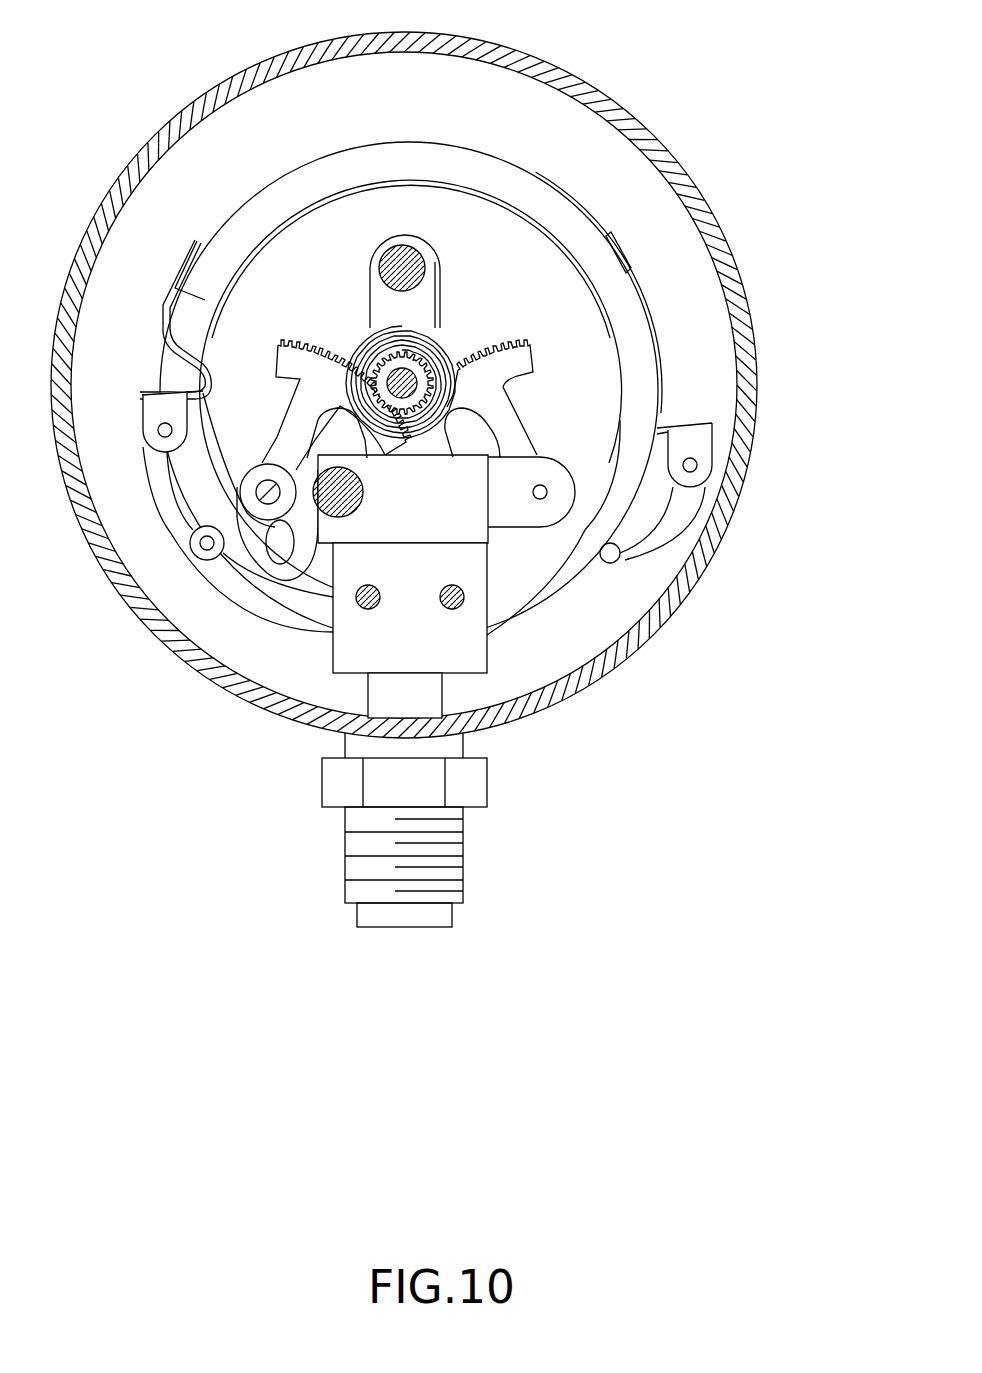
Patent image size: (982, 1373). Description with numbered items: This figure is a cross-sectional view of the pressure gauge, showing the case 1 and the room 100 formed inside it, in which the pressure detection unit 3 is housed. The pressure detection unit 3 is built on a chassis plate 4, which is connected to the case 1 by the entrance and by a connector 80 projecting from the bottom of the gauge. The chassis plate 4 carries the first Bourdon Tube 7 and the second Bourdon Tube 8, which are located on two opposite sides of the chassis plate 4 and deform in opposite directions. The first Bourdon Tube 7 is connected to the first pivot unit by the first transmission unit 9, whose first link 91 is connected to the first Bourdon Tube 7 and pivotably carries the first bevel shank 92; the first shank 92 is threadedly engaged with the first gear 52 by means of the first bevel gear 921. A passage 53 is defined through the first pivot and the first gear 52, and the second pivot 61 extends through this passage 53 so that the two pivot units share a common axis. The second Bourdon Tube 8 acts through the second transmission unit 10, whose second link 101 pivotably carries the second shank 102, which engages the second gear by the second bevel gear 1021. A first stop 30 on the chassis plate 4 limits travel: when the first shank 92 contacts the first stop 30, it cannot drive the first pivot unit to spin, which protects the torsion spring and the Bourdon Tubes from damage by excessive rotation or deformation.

The case 1 is at (628, 88).
The room 100 is at (262, 112).
The pressure detection unit 3 is at (650, 247).
The first Bourdon Tube 7 is at (427, 147).
The second Bourdon Tube 8 is at (172, 370).
The first transmission unit 9 is at (196, 563).
The first link 91 is at (170, 480).
The first bevel shank 92 is at (237, 562).
The first bevel gear 921 is at (303, 345).
The second transmission unit 10 is at (662, 462).
The second link 101 is at (687, 500).
The second shank 102 is at (636, 462).
The second bevel gear 1021 is at (490, 355).
The chassis plate 4 is at (480, 658).
The first stop 30 is at (367, 493).
The connector 80 is at (463, 842).
The first gear 52 is at (365, 345).
The passage 53 is at (428, 335).
The second pivot 61 is at (365, 360).